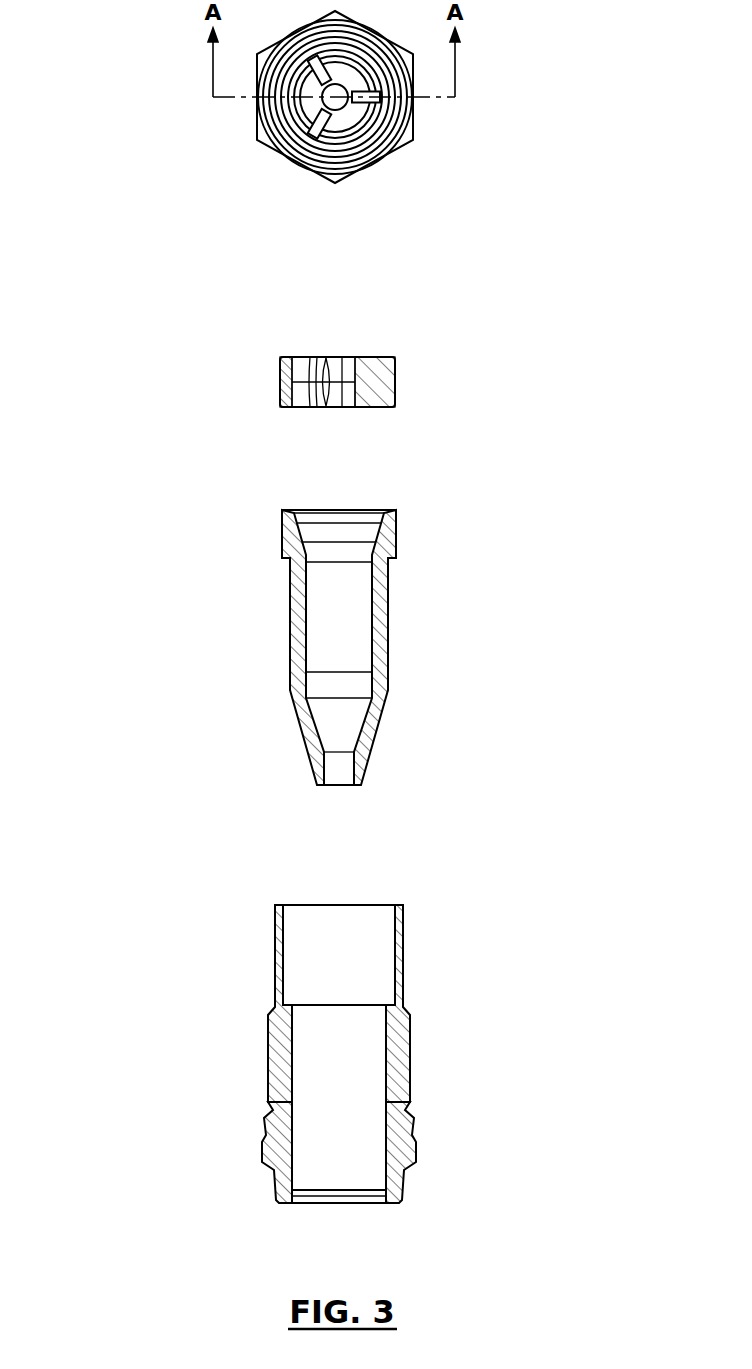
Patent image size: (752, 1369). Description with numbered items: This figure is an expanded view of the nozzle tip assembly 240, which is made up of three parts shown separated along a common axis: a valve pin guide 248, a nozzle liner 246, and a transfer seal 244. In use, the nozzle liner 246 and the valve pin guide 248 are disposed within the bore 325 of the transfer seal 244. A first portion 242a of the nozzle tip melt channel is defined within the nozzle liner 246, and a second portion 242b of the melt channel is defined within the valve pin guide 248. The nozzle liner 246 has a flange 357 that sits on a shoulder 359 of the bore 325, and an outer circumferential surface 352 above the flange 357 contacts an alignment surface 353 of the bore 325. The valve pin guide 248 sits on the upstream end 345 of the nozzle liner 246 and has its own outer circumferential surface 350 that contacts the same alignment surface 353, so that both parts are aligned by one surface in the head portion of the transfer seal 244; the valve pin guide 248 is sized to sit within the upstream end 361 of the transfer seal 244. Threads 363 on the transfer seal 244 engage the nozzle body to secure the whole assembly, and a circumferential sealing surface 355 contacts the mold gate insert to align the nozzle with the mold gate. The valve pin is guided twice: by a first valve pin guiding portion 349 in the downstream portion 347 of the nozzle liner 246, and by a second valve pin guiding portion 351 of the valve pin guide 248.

The nozzle tip assembly 240 is at (120, 541).
The valve pin guide 248 is at (438, 380).
The outer circumferential surface 350 is at (280, 378).
The second portion of nozzle tip melt channel 242b is at (344, 370).
The second valve pin guiding portion 351 is at (344, 403).
The nozzle liner 246 is at (438, 635).
The outer circumferential surface 352 is at (280, 535).
The upstream end 345 is at (396, 530).
The flange 357 is at (388, 561).
The first portion of nozzle tip melt channel 242a is at (317, 630).
The downstream portion 347 is at (368, 765).
The first valve pin guiding portion 349 is at (334, 772).
The transfer seal 244 is at (475, 1048).
The upstream end 361 is at (402, 903).
The shoulder 359 is at (405, 985).
The alignment surface 353 is at (295, 965).
The threads 363 is at (268, 1055).
The bore 325 is at (362, 1083).
The circumferential sealing surface 355 is at (402, 1190).